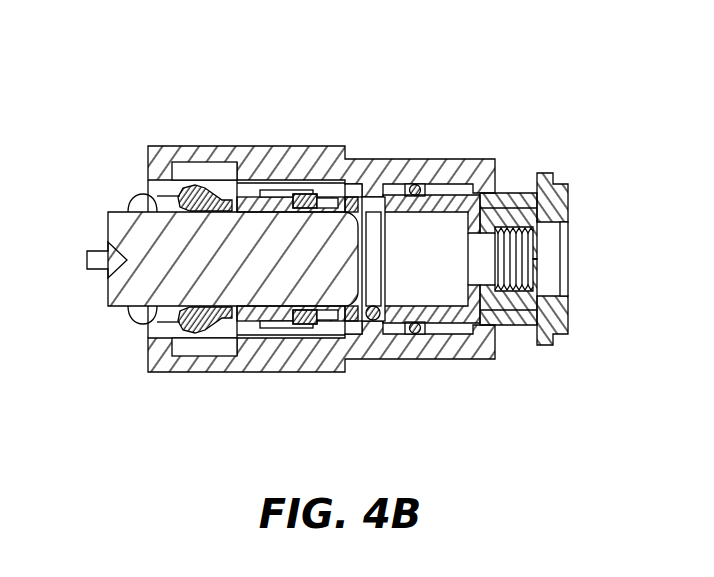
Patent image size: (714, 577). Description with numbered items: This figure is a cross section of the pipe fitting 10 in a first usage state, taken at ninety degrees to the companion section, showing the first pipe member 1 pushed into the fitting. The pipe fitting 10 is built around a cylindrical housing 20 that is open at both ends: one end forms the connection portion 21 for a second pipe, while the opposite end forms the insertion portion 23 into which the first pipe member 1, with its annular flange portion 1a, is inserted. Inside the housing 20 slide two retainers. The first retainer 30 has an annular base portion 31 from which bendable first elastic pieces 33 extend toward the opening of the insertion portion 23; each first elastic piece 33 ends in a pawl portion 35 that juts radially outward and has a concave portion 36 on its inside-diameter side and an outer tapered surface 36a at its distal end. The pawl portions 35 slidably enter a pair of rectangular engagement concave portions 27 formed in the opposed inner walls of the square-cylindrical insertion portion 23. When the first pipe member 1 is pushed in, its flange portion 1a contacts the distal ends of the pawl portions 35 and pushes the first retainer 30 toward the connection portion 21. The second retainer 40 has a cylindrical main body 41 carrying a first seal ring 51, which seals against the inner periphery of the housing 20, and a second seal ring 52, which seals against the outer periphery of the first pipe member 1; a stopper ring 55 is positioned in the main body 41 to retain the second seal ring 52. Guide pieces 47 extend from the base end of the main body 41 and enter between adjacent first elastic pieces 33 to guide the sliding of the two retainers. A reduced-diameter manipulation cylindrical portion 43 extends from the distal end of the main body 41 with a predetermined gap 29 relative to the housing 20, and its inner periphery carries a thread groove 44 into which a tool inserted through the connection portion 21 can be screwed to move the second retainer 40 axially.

The first pipe member 1 is at (112, 297).
The flange portion 1a is at (139, 196).
The pipe fitting 10 is at (350, 138).
The housing 20 is at (431, 150).
The connection portion 21 is at (558, 321).
The insertion portion 23 is at (152, 326).
The engagement concave portion 27 is at (187, 161).
The gap 29 is at (525, 213).
The first retainer 30 is at (313, 182).
The base portion 31 is at (313, 321).
The first elastic piece 33 is at (255, 190).
The pawl portion 35 is at (212, 190).
The concave portion 36 is at (217, 184).
The outer tapered surface 36a is at (190, 186).
The second retainer 40 is at (456, 190).
The main body 41 is at (445, 326).
The manipulation cylindrical portion 43 is at (505, 300).
The thread groove 44 is at (512, 206).
The guide piece 47 is at (326, 322).
The first seal ring 51 is at (412, 184).
The second seal ring 52 is at (372, 197).
The stopper ring 55 is at (360, 321).